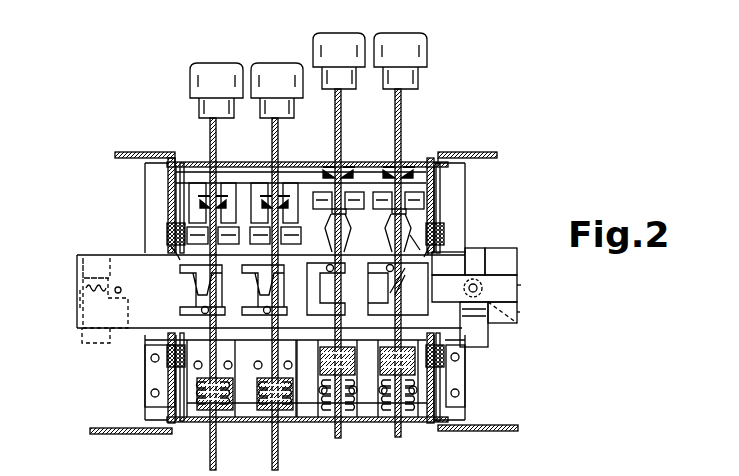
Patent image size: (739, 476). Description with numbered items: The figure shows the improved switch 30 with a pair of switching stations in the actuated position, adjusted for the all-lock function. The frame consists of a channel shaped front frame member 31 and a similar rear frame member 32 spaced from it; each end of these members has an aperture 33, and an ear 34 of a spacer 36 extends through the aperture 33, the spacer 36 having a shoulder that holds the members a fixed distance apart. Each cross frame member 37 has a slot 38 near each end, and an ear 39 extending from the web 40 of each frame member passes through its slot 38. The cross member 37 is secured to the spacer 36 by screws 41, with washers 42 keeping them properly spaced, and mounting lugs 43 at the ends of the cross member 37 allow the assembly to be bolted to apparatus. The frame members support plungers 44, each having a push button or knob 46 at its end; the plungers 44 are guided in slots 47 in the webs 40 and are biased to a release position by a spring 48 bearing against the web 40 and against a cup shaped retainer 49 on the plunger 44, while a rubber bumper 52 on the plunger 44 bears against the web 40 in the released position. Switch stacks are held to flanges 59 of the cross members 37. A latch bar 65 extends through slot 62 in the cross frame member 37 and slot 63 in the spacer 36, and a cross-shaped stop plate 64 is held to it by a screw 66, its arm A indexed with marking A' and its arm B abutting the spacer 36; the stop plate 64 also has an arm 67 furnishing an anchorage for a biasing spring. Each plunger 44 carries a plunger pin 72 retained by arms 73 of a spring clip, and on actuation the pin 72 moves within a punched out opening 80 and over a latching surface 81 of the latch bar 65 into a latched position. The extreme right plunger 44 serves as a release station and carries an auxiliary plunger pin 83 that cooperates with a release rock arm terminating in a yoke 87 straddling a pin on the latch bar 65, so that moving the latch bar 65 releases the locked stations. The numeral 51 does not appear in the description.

The switch 30 is at (539, 125).
The front frame member 31 is at (291, 166).
The rear frame member 32 is at (294, 422).
The aperture 33 is at (176, 160).
The ear 34 is at (172, 156).
The spacer 36 is at (180, 204).
The cross frame member 37 is at (168, 210).
The slot 38 is at (145, 166).
The ear 39 is at (144, 166).
The web 40 is at (315, 167).
The screw 41 is at (167, 219).
The washer 42 is at (174, 238).
The mounting lug 43 is at (139, 150).
The plunger 44 is at (216, 132).
The push button or knob 46 is at (212, 63).
The slot 47 is at (224, 163).
The spring 48 is at (251, 428).
The cup shaped retainer 49 is at (231, 377).
The contact lever 51 is at (200, 198).
The rubber bumper 52 is at (227, 204).
The flange 59 is at (146, 370).
The slot 62 is at (169, 254).
The slot 63 is at (174, 261).
The stop plate 64 is at (508, 280).
The latch bar 65 is at (246, 251).
The screw 66 is at (517, 310).
The arm 67 is at (521, 285).
The plunger pin 72 is at (210, 309).
The arm 73 is at (370, 251).
The punched out opening 80 is at (325, 287).
The latching surface 81 is at (214, 285).
The auxiliary plunger pin 83 is at (398, 289).
The yoke 87 is at (419, 241).